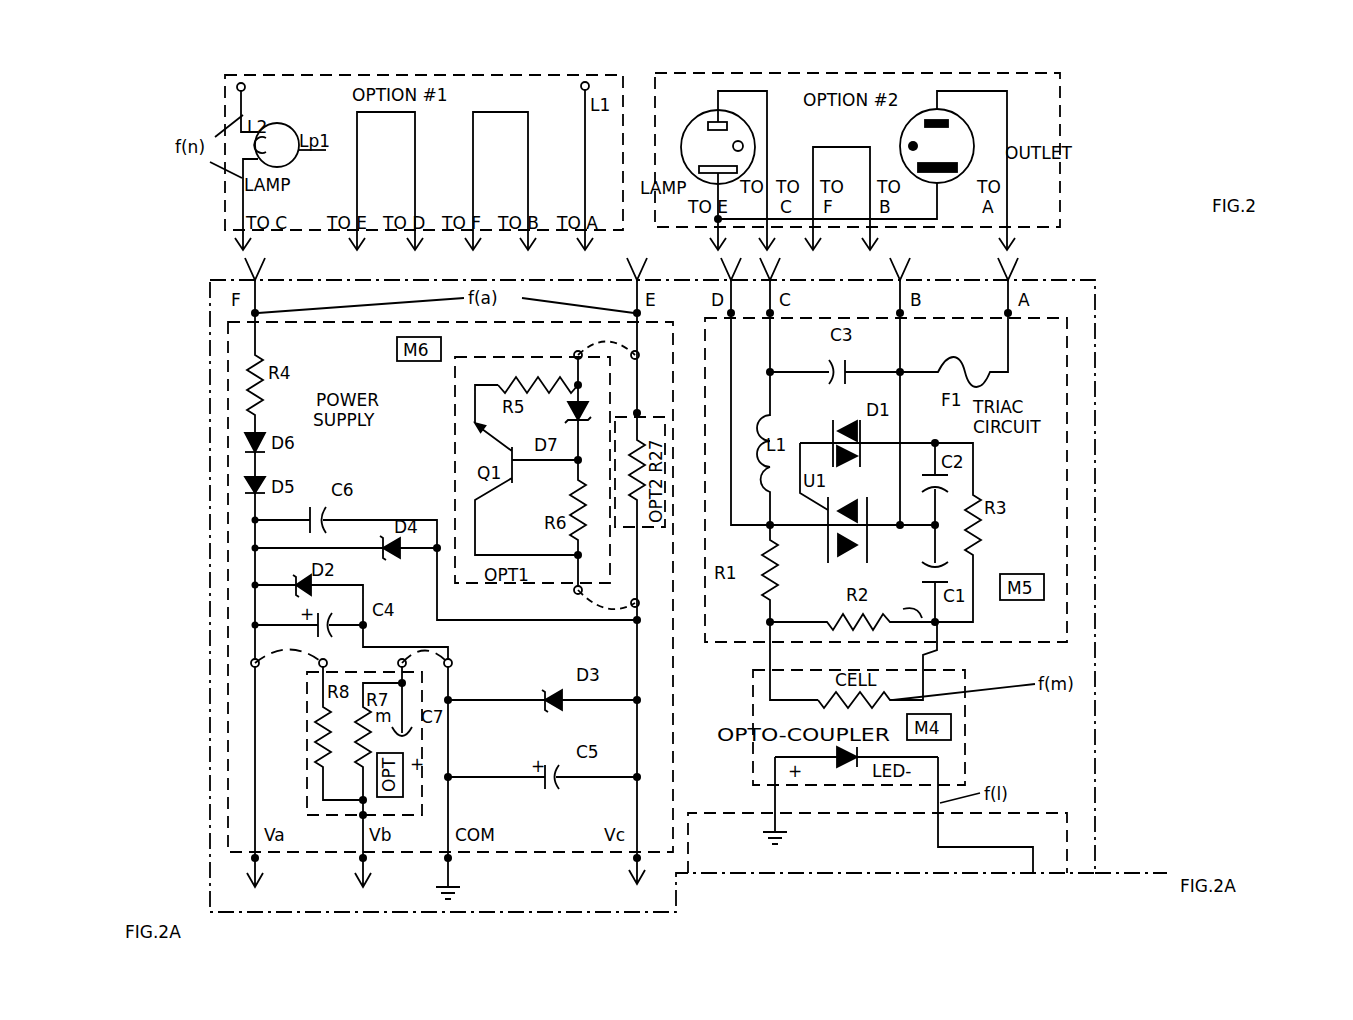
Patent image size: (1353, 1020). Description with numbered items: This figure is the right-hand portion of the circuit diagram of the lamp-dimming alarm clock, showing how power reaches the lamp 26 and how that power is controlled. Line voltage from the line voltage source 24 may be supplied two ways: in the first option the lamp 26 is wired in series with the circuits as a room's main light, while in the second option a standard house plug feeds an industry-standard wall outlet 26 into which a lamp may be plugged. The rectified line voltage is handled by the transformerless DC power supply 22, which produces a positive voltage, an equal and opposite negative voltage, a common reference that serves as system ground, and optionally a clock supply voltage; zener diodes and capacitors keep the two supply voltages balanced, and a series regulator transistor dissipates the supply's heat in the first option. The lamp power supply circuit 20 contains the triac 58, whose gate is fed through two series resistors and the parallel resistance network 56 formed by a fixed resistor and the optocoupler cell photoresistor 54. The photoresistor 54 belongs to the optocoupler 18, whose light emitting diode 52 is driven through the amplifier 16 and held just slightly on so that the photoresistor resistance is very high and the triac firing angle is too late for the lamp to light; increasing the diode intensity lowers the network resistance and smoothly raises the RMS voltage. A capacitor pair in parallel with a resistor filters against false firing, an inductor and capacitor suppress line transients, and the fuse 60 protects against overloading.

The amplifier 16 is at (1058, 833).
The optocoupler 18 is at (957, 767).
The lamp power supply circuit 20 is at (1040, 620).
The DC power supply 22 is at (247, 688).
The line voltage source 24 is at (245, 89).
The lamp 26 is at (284, 160).
The LED 52 is at (846, 764).
The optocoupler cell photoresistor 54 is at (818, 698).
The parallel resistance network 56 is at (893, 624).
The triac 58 is at (887, 524).
The fuse 60 is at (952, 363).